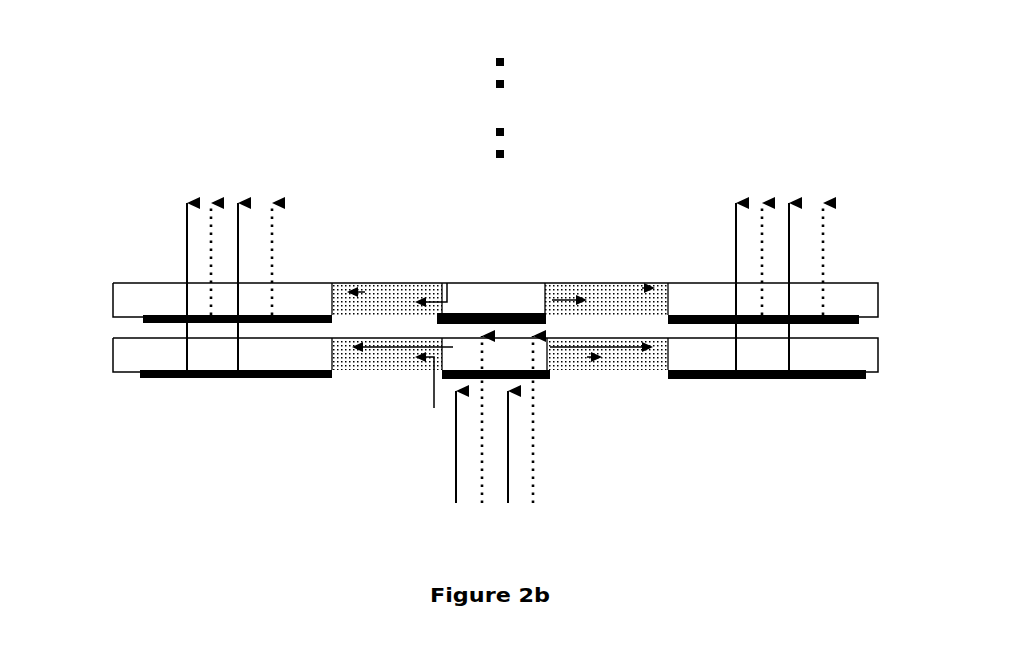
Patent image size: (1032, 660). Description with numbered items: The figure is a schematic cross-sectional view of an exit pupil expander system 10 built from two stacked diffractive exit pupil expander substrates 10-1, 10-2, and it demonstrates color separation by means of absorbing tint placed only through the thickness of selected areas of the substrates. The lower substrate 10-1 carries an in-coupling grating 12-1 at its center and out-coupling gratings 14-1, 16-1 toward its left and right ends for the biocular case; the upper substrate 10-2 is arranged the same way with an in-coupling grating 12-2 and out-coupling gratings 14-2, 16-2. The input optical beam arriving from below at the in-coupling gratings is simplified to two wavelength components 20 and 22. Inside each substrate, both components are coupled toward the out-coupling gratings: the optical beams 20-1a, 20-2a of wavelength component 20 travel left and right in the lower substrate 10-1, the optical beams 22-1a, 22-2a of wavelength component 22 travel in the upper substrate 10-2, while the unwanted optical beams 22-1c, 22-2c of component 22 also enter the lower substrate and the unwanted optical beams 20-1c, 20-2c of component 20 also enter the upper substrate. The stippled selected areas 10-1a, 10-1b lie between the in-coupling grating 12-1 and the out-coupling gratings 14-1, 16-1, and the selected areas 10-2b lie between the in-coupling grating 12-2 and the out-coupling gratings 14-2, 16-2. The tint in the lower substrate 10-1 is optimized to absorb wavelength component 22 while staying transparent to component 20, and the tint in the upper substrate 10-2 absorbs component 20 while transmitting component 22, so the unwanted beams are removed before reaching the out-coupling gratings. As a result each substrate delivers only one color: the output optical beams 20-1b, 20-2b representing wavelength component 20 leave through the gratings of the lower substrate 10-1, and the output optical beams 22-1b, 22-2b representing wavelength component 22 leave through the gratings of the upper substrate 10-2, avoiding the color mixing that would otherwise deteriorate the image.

The exit pupil expander system 10 is at (556, 103).
The substrate 10-1 is at (138, 355).
The substrate 10-2 is at (130, 307).
The in-coupling grating 12-1 is at (537, 378).
The in-coupling grating 12-2 is at (503, 313).
The out-coupling grating 14-1 is at (227, 380).
The out-coupling grating 14-2 is at (172, 313).
The out-coupling grating 16-1 is at (778, 379).
The out-coupling grating 16-2 is at (840, 313).
The wavelength component 20 is at (455, 477).
The wavelength component 22 is at (533, 478).
The optical beam 20-1a is at (377, 348).
The optical beam 20-1b is at (182, 222).
The unwanted optical beam 20-1c is at (447, 283).
The optical beam 20-2a is at (632, 350).
The optical beam 20-2b is at (735, 202).
The unwanted optical beam 20-2c is at (565, 296).
The optical beam 22-1a is at (387, 290).
The optical beam 22-1b is at (273, 220).
The unwanted optical beam 22-1c is at (402, 387).
The optical beam 22-2a is at (601, 290).
The optical beam 22-2b is at (820, 213).
The unwanted optical beam 22-2c is at (573, 360).
The selected area 10-1a is at (375, 360).
The selected area 10-1b is at (618, 360).
The selected area 10-2b is at (347, 300).